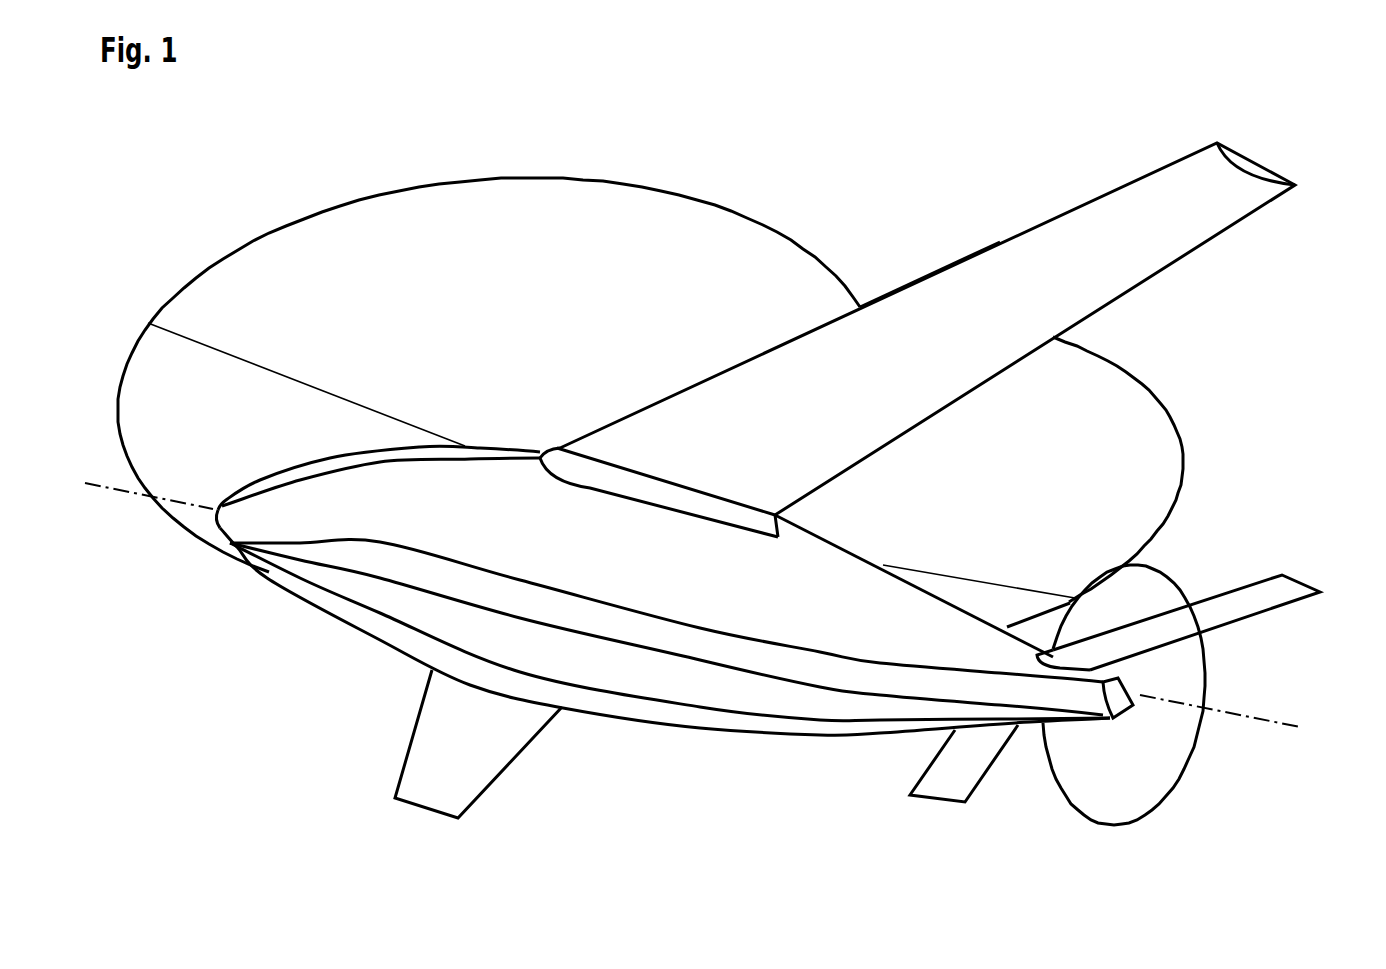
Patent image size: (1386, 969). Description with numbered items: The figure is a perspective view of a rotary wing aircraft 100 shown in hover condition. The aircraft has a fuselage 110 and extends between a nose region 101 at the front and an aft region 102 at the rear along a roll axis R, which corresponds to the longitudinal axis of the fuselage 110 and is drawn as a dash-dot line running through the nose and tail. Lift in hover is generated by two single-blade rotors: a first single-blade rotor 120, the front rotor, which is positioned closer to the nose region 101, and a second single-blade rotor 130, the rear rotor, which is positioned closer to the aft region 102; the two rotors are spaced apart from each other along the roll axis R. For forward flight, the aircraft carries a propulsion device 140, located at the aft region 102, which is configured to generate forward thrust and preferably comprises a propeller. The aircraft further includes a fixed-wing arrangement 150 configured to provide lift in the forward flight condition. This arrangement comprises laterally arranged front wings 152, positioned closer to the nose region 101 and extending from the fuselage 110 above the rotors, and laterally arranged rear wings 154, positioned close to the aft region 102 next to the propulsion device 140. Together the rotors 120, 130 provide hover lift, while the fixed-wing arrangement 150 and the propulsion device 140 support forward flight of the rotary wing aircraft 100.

The rotary wing aircraft 100 is at (228, 178).
The nose region 101 is at (213, 510).
The aft region 102 is at (1135, 715).
The fuselage 110 is at (630, 677).
The first single-blade rotor 120 is at (555, 172).
The second single-blade rotor 130 is at (1160, 396).
The propulsion device 140 is at (1212, 667).
The fixed-wing arrangement 150 is at (1092, 193).
The front wings 152 is at (1000, 273).
The rear wings 154 is at (1288, 587).
The roll axis R is at (1232, 722).